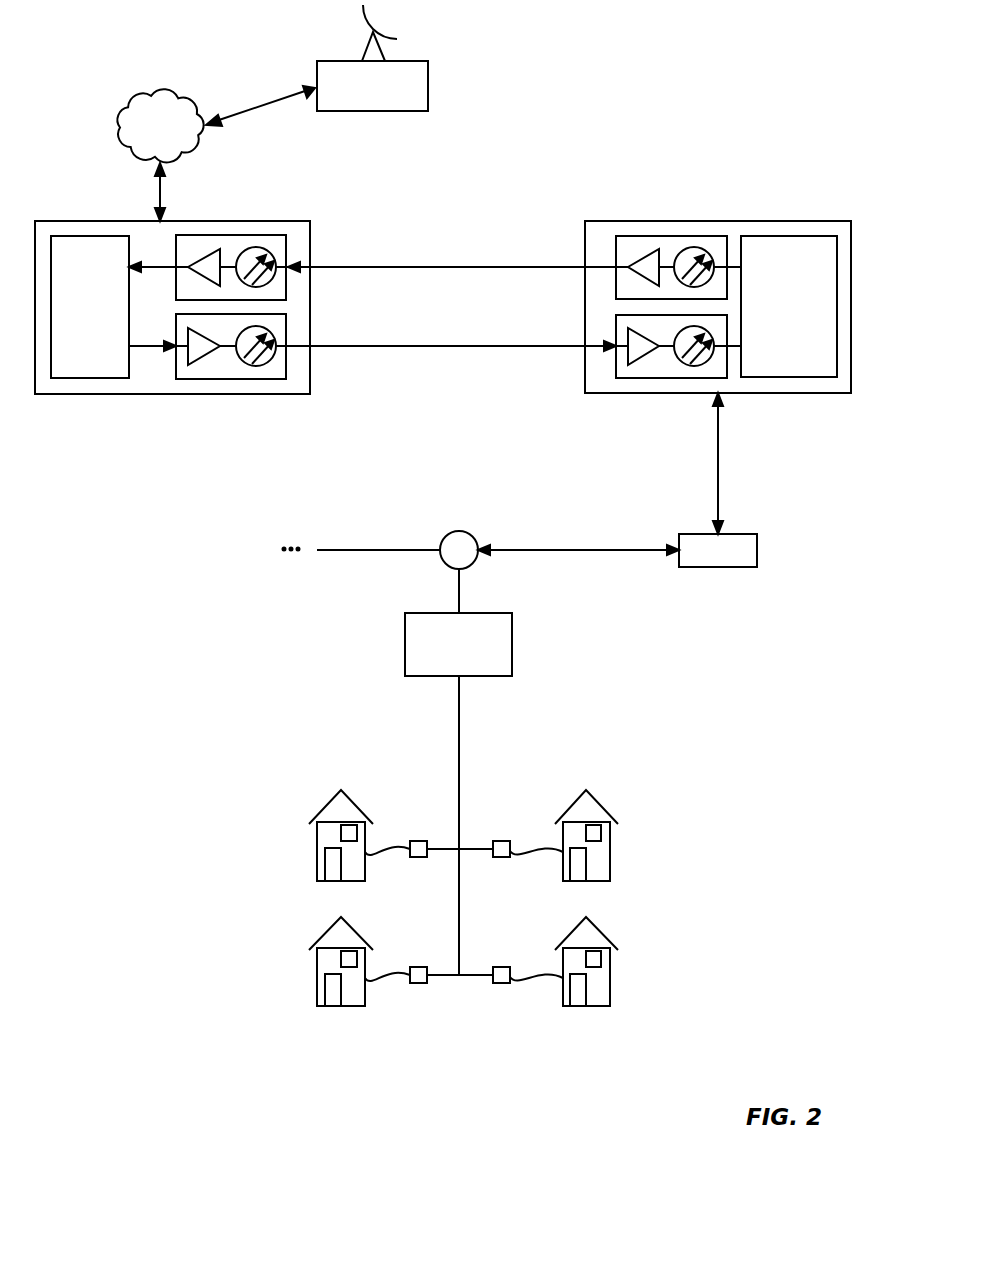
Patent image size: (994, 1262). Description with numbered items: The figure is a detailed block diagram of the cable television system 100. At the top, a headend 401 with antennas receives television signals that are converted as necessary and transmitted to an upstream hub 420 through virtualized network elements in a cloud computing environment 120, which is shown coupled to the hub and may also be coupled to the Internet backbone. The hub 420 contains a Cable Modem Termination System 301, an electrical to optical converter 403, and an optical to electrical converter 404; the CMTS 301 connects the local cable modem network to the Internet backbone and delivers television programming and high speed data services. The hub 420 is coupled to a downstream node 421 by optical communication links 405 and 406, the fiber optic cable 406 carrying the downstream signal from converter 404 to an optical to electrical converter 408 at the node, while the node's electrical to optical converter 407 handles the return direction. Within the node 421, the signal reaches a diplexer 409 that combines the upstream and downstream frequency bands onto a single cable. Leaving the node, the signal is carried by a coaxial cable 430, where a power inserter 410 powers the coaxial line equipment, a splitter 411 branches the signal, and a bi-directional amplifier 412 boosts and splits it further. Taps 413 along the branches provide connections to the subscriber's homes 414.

The cable television system 100 is at (687, 100).
The cloud computing environment 120 is at (177, 138).
The headend 401 is at (389, 99).
The Cable Modem Termination System 301 is at (107, 330).
The electrical to optical converter 403 is at (213, 235).
The optical to electrical converter 404 is at (232, 379).
The optical communication link 405 is at (445, 267).
The fiber optic cable 406 is at (403, 346).
The electrical to optical converter 407 is at (671, 236).
The optical to electrical converter 408 is at (670, 378).
The diplexer 409 is at (806, 330).
The power inserter 410 is at (735, 561).
The splitter 411 is at (457, 528).
The bi-directional amplifier 412 is at (458, 794).
The taps 413 is at (422, 841).
The subscriber's homes 414 is at (335, 792).
The upstream hub 420 is at (129, 394).
The downstream node 421 is at (832, 393).
The coaxial cable 430 is at (738, 487).